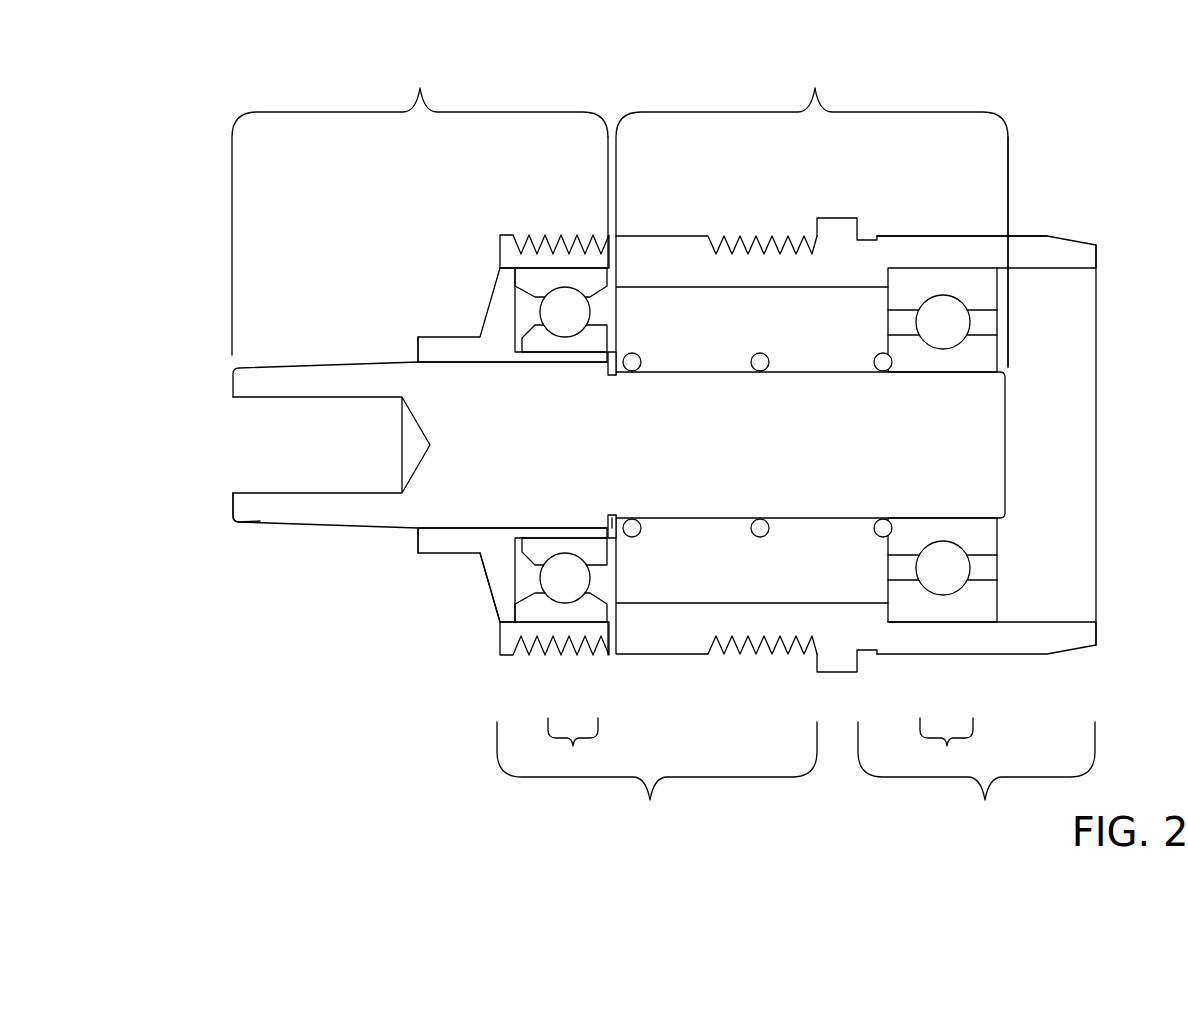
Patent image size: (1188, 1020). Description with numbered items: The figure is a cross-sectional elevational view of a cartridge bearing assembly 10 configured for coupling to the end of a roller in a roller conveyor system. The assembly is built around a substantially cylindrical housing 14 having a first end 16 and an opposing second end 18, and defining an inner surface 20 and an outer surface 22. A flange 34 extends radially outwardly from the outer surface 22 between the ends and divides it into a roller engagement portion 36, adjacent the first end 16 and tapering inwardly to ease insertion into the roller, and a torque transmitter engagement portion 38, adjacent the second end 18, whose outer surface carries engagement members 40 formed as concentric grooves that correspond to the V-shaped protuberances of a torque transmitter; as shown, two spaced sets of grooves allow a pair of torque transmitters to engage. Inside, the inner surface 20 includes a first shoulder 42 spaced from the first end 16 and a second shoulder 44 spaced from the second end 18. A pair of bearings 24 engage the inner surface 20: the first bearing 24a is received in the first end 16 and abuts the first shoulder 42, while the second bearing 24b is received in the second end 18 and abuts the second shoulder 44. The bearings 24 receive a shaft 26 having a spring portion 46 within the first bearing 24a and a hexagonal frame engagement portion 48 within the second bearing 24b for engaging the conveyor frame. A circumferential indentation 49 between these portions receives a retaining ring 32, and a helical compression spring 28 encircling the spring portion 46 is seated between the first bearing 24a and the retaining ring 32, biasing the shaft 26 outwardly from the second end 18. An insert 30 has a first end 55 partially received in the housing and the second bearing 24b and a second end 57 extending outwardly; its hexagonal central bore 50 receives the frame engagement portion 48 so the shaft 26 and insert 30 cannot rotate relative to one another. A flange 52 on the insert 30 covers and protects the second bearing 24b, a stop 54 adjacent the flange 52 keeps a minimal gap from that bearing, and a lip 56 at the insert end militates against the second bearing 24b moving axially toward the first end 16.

The cartridge bearing assembly 10 is at (1091, 153).
The housing 14 is at (963, 236).
The first end 16 is at (1100, 257).
The second end 18 is at (500, 258).
The inner surface 20 is at (775, 288).
The outer surface 22 is at (900, 236).
The bearings 24 is at (760, 746).
The first bearing 24a is at (943, 623).
The second bearing 24b is at (587, 625).
The shaft 26 is at (467, 492).
The spring 28 is at (621, 535).
The insert 30 is at (418, 348).
The retaining ring 32 is at (619, 536).
The flange 34 is at (838, 218).
The roller engagement portion 36 is at (976, 775).
The torque transmitter engagement portion 38 is at (657, 775).
The engagement members 40 is at (773, 650).
The first shoulder 42 is at (893, 615).
The second shoulder 44 is at (592, 270).
The spring portion 46 is at (812, 213).
The frame engagement portion 48 is at (420, 207).
The indentation 49 is at (614, 372).
The central bore 50 is at (430, 443).
The flange 52 is at (500, 292).
The stop 54 is at (483, 560).
The first end 55 is at (617, 537).
The lip 56 is at (615, 538).
The second end 57 is at (232, 507).